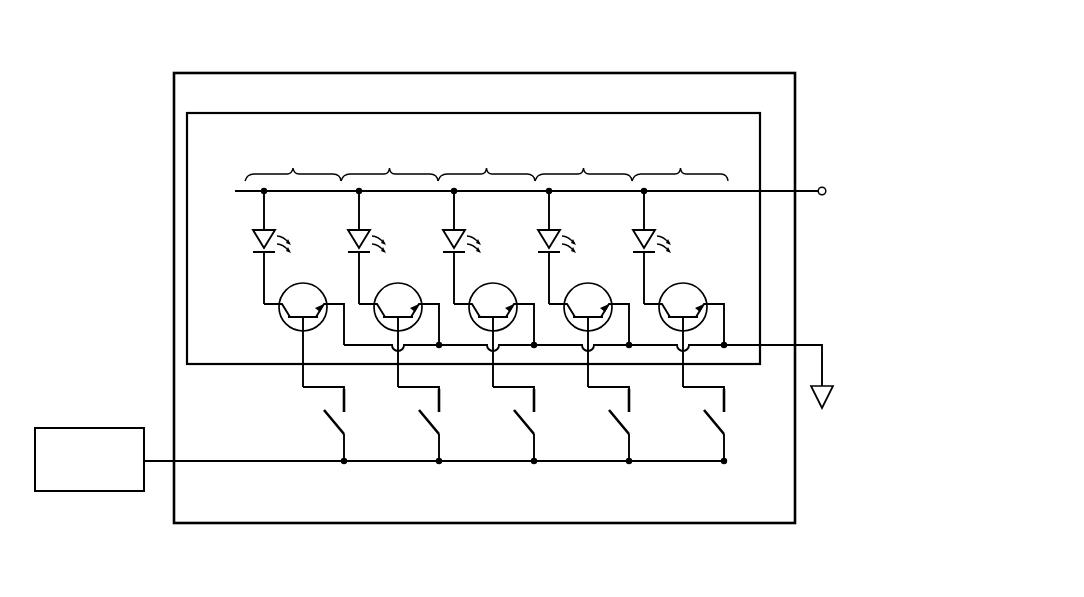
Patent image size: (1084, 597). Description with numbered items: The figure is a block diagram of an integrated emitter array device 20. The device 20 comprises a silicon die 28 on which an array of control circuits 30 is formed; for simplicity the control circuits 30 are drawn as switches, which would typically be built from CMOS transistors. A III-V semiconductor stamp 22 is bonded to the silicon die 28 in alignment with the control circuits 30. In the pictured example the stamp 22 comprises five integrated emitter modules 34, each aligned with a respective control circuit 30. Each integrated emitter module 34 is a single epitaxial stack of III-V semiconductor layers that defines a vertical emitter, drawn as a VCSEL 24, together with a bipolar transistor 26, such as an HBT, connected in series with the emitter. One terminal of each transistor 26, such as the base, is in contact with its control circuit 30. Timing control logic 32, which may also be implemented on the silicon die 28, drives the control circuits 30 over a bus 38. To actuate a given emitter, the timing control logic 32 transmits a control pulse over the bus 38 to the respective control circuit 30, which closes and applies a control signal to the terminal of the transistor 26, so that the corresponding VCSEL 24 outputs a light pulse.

The integrated emitter array device 20 is at (802, 47).
The III-V semiconductor stamp 22 is at (248, 113).
The VCSEL 24 is at (253, 238).
The bipolar transistor 26 is at (376, 313).
The silicon die 28 is at (779, 508).
The control circuit 30 is at (332, 419).
The timing control logic 32 is at (71, 491).
The integrated emitter module 34 is at (486, 163).
The bus 38 is at (228, 462).